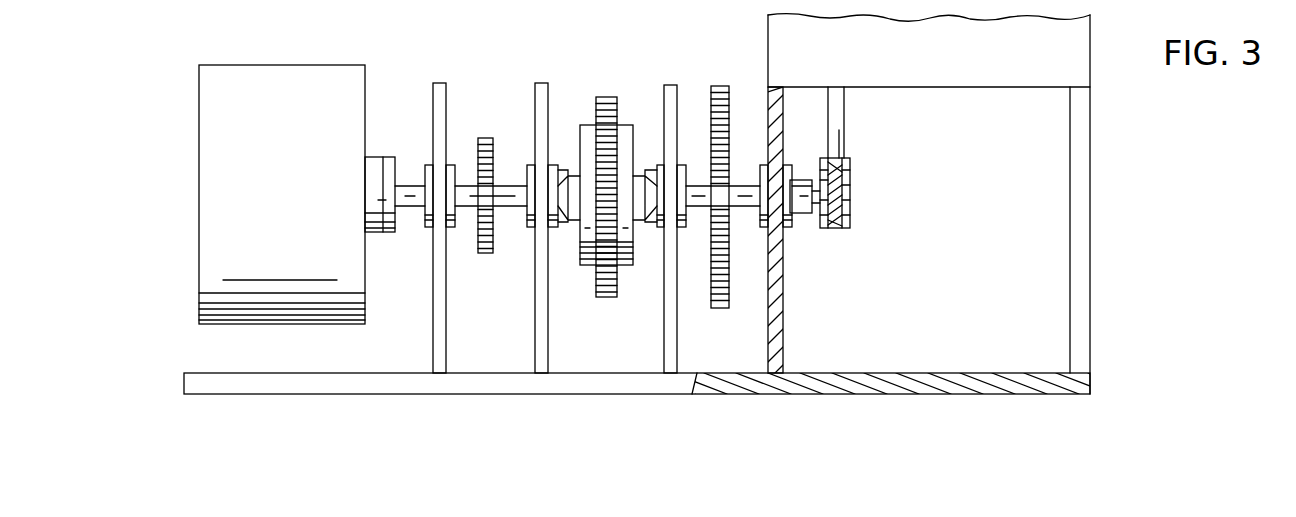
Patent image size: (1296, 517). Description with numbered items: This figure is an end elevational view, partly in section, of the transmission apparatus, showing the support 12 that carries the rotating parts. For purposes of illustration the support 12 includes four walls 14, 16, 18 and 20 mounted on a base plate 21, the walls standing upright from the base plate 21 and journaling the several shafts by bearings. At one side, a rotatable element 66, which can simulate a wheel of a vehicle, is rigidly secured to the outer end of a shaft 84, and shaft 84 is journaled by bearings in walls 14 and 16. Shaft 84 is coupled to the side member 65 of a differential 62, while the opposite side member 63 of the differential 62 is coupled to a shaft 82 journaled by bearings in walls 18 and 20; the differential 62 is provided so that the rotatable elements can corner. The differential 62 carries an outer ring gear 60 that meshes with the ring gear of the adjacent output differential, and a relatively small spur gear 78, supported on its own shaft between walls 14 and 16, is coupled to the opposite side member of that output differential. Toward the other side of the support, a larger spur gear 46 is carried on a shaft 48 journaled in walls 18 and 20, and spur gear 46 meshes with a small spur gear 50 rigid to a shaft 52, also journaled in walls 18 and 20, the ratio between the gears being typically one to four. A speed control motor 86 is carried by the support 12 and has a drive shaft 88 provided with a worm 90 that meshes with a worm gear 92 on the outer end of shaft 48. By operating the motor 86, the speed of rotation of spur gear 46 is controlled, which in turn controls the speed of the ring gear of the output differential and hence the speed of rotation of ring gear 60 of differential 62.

The support 12 is at (476, 228).
The wall 14 is at (447, 350).
The wall 16 is at (548, 330).
The wall 18 is at (678, 355).
The wall 20 is at (784, 353).
The base plate 21 is at (372, 373).
The spur gear 46 is at (720, 308).
The shaft 48 is at (812, 213).
The spur gear 50 is at (731, 228).
The shaft 52 is at (742, 185).
The outer ring gear 60 is at (598, 95).
The differential 62 is at (605, 166).
The side member 63 is at (635, 238).
The side member 65 is at (577, 238).
The rotatable element 66 is at (340, 65).
The spur gear 78 is at (484, 138).
The shaft 82 is at (700, 203).
The shaft 84 is at (411, 185).
The speed control motor 86 is at (957, 75).
The drive shaft 88 is at (845, 138).
The worm 90 is at (851, 193).
The worm gear 92 is at (846, 218).